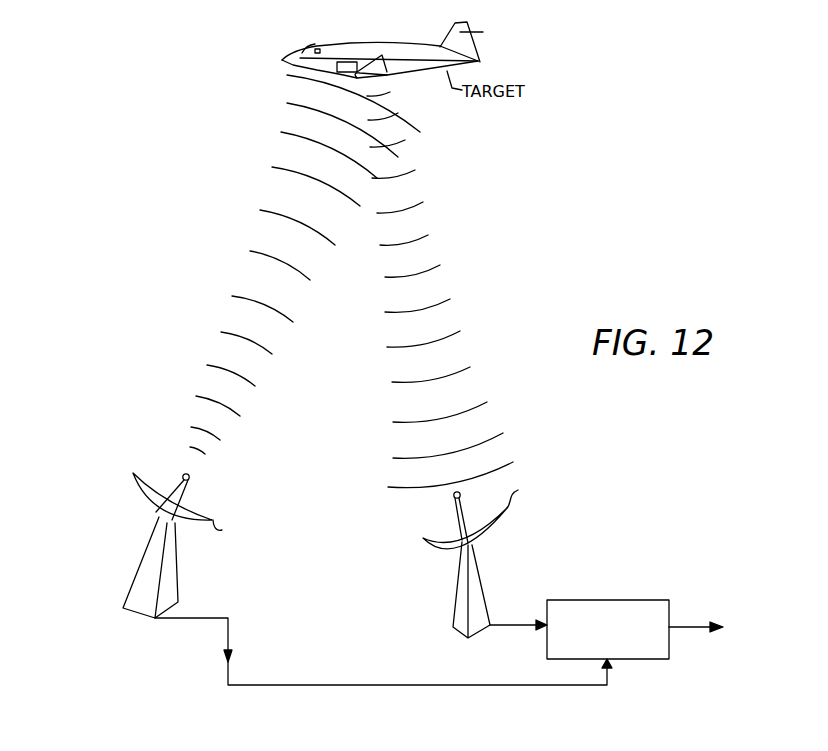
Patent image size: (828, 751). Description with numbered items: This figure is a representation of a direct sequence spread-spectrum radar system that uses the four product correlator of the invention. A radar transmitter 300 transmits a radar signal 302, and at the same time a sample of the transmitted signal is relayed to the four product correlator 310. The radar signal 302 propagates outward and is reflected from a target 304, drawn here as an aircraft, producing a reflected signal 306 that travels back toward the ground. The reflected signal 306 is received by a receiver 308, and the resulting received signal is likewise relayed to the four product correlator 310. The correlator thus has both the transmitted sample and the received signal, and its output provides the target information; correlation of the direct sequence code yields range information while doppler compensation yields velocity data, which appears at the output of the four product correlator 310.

The radar transmitter 300 is at (157, 537).
The radar signal 302 is at (250, 248).
The target 304 is at (283, 59).
The reflected signal 306 is at (445, 291).
The receiver 308 is at (478, 568).
The four product correlator 310 is at (622, 598).